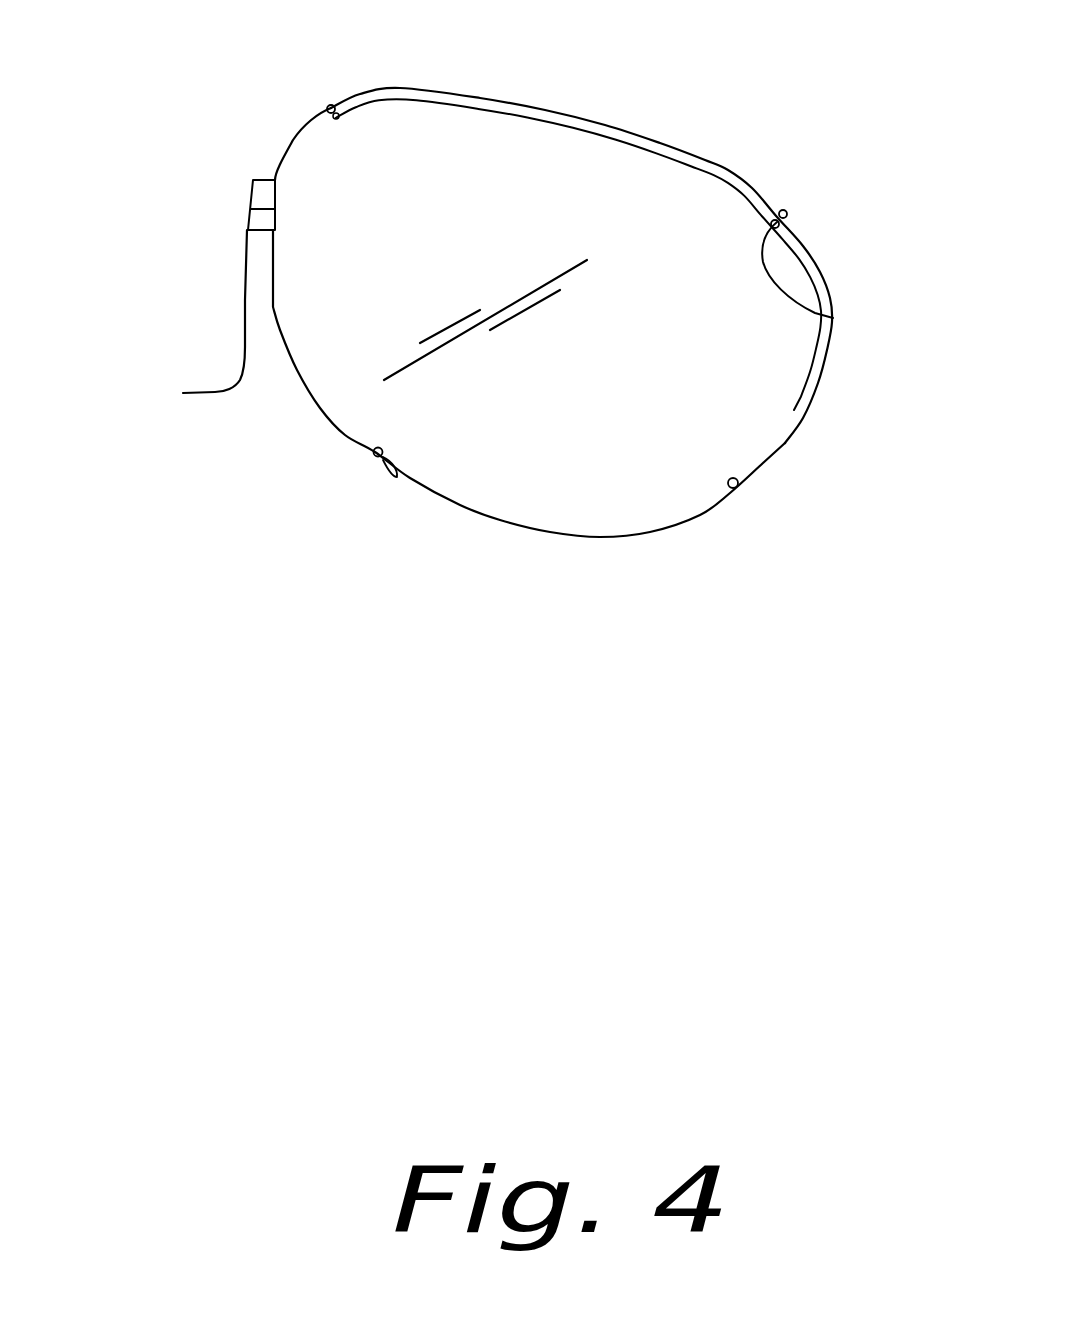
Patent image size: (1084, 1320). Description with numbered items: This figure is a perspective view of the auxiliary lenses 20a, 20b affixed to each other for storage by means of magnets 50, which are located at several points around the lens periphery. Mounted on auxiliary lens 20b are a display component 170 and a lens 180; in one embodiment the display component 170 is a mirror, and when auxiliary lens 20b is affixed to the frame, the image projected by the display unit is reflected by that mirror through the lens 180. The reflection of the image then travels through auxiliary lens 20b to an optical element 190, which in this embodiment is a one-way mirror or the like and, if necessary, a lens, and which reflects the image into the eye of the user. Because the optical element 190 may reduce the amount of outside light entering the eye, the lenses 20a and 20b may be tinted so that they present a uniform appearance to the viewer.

The lens 20a is at (726, 168).
The auxiliary lens 20b is at (543, 477).
The magnets 50 is at (326, 108).
The display component 170 is at (170, 320).
The lens 180 is at (251, 203).
The optical element 190 is at (496, 265).